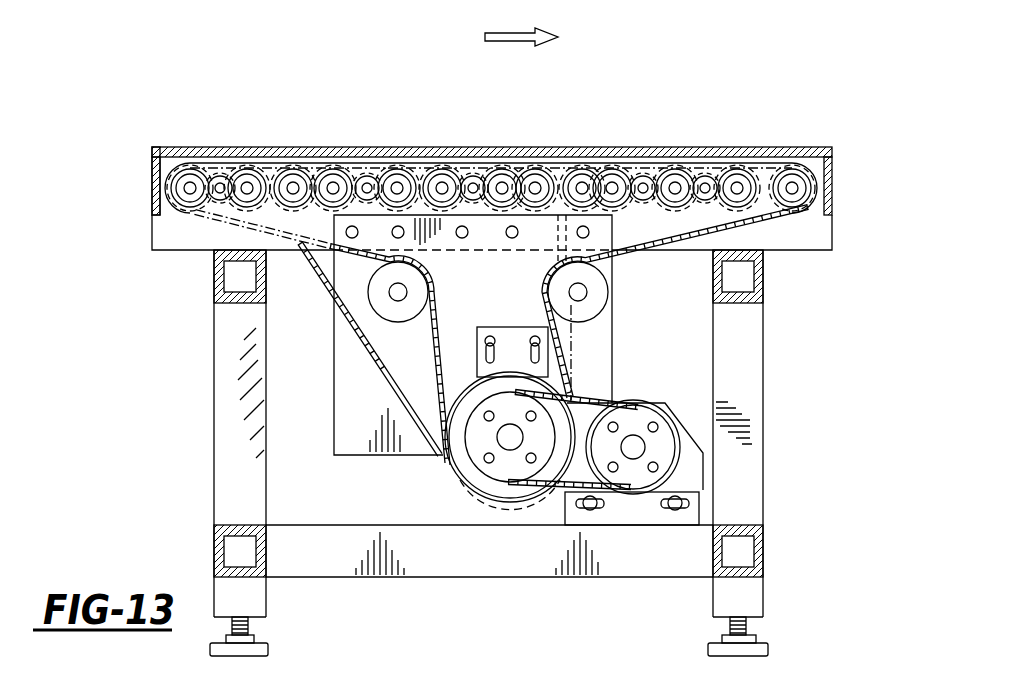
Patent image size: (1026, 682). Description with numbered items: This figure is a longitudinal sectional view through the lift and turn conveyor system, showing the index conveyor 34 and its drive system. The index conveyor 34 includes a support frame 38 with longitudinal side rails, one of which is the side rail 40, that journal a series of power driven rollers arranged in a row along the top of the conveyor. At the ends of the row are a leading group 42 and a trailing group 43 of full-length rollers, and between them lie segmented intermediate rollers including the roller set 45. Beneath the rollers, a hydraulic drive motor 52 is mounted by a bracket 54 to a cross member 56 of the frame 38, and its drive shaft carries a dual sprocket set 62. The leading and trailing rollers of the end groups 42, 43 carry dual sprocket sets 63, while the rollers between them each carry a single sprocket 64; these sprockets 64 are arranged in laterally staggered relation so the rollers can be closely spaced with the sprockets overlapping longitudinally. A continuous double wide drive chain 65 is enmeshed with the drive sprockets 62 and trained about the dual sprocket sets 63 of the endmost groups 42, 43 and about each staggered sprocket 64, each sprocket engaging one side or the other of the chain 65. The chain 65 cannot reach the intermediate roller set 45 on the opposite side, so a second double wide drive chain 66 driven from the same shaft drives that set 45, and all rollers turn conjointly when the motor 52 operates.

The index conveyor 34 is at (777, 143).
The support frame 38 is at (185, 143).
The longitudinal side rail 40 is at (156, 170).
The leading group of rollers 42 is at (247, 193).
The trailing group of rollers 43 is at (582, 192).
The right hand roller set 45 is at (367, 196).
The hydraulic drive motor 52 is at (528, 475).
The bracket 54 is at (637, 512).
The cross member 56 is at (413, 562).
The dual sprocket set 62 is at (493, 488).
The dual sprocket sets 63 is at (172, 186).
The single sprocket 64 is at (220, 186).
The double wide drive chain 65 is at (435, 366).
The second double wide drive chain 66 is at (366, 342).